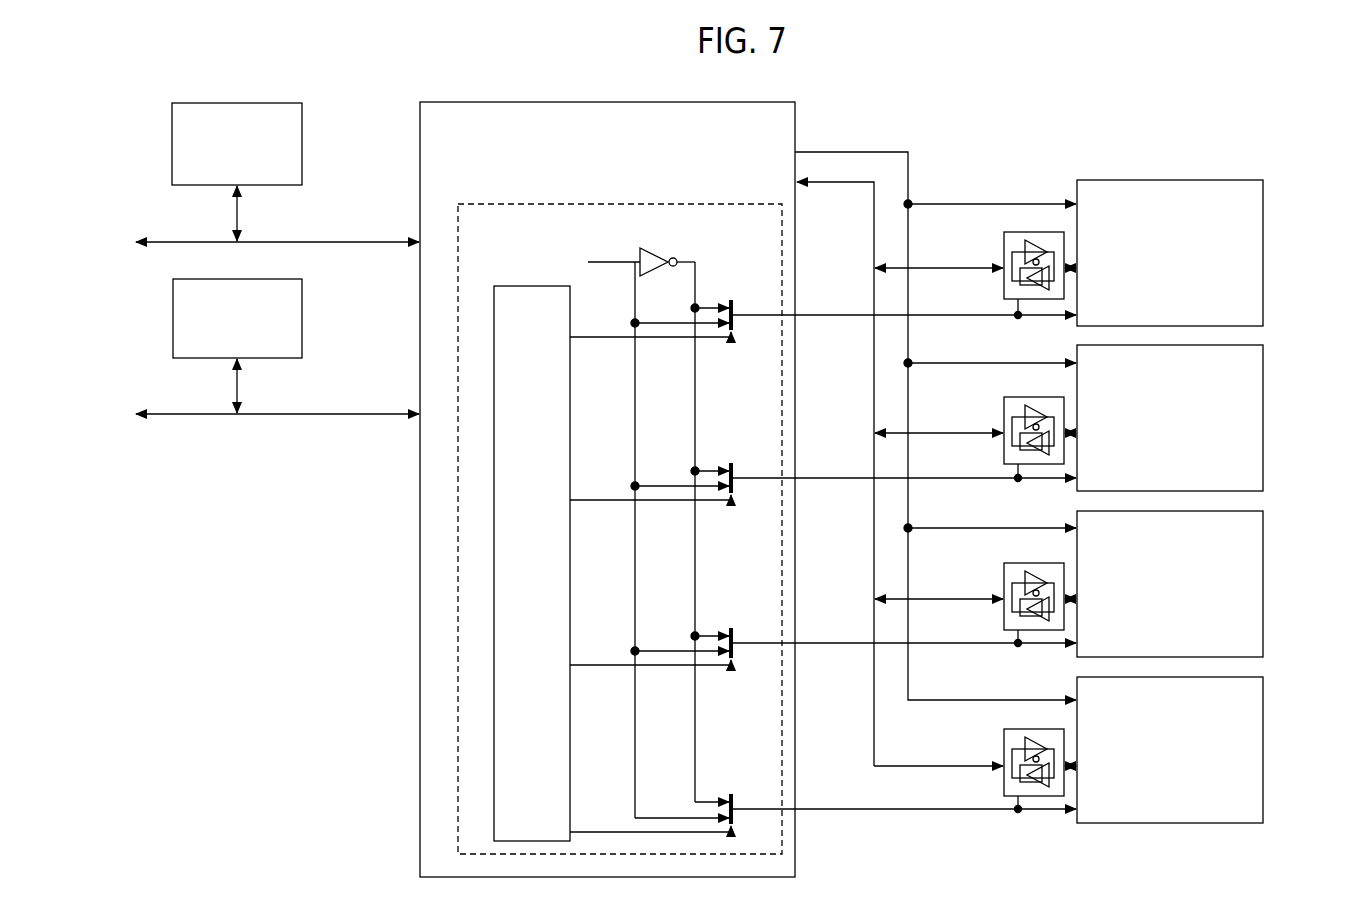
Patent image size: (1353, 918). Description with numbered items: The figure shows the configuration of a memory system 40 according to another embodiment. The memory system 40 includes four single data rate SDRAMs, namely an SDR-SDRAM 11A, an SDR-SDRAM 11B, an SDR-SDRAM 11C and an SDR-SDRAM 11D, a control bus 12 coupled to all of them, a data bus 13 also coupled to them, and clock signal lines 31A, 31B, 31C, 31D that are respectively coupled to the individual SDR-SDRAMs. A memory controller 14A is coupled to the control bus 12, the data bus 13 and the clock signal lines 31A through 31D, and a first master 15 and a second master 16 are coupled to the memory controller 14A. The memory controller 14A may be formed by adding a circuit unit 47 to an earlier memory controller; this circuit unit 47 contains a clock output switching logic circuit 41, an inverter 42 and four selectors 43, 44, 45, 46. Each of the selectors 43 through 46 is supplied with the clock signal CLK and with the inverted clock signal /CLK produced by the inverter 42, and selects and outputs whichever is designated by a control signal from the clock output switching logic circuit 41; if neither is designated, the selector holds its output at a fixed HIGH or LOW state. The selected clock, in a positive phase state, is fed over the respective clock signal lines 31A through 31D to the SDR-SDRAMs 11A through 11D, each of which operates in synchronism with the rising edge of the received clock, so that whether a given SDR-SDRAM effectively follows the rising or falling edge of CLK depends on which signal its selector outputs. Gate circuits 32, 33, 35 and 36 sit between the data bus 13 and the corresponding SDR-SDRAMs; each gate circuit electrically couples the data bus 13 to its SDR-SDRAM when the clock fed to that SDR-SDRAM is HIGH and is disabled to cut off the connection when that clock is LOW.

The memory system 40 is at (1013, 87).
The first master 15 is at (303, 142).
The second master 16 is at (303, 316).
The memory controller 14A is at (672, 102).
The circuit unit 47 is at (612, 205).
The clock output switching logic circuit 41 is at (496, 286).
The inverter 42 is at (655, 247).
The selector 43 is at (731, 296).
The selector 44 is at (731, 459).
The selector 45 is at (731, 624).
The selector 46 is at (732, 790).
The clock signal line 31A is at (800, 315).
The clock signal line 31B is at (800, 478).
The clock signal line 31C is at (800, 643).
The clock signal line 31D is at (800, 809).
The control bus 12 is at (805, 152).
The data bus 13 is at (866, 182).
The gate circuit 32 is at (1004, 262).
The gate circuit 33 is at (1004, 427).
The gate circuit 35 is at (1004, 593).
The gate circuit 36 is at (1004, 759).
The SDR-SDRAM 11A is at (1263, 252).
The SDR-SDRAM 11B is at (1263, 419).
The SDR-SDRAM 11C is at (1263, 585).
The SDR-SDRAM 11D is at (1263, 752).